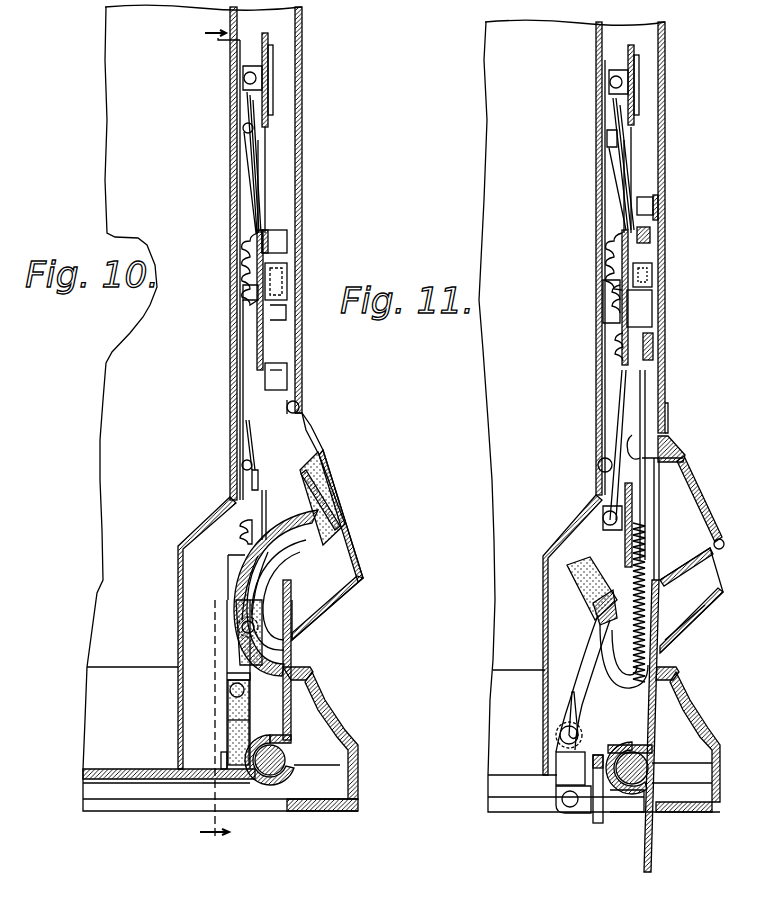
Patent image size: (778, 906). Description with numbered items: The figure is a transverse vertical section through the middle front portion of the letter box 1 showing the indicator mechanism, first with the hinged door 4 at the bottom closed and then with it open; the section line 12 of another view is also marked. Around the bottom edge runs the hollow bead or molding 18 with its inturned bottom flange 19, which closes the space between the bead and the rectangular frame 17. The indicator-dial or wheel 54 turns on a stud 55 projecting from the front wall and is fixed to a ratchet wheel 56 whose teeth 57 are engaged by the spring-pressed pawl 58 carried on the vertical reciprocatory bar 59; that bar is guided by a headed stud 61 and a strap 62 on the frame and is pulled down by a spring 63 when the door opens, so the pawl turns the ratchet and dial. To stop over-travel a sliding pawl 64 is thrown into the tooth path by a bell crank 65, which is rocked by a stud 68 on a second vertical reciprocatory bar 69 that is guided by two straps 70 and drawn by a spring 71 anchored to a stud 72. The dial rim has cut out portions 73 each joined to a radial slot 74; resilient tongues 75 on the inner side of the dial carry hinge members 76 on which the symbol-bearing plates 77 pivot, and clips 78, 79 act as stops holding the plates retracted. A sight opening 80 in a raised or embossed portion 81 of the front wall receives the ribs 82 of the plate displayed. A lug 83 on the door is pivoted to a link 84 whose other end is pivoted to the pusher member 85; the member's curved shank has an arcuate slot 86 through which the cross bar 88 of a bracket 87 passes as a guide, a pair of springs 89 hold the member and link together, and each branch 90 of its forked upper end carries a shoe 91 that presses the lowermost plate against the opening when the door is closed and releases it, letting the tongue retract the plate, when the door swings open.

In FIG. 10, the letter box 1 is at (300, 104).
In FIG. 11, the letter box 1 is at (663, 123).
In FIG. 10, the hinged door 4 is at (105, 773).
In FIG. 11, the hinged door 4 is at (653, 834).
In FIG. 10, the section line 12— 12 is at (219, 436).
In FIG. 10, the rectangular frame 17 is at (290, 713).
In FIG. 11, the rectangular frame 17 is at (658, 708).
In FIG. 10, the hollow bead or molding 18 is at (347, 741).
In FIG. 11, the hollow bead or molding 18 is at (704, 753).
In FIG. 10, the inturned bottom flange 19 is at (268, 810).
In FIG. 11, the inturned bottom flange 19 is at (705, 805).
In FIG. 10, the indicator-dial or wheel 54 is at (262, 323).
In FIG. 11, the indicator-dial or wheel 54 is at (627, 253).
In FIG. 10, the stud 55 is at (276, 313).
In FIG. 10, the ratchet wheel 56 is at (273, 281).
In FIG. 11, the ratchet wheel 56 is at (640, 323).
In FIG. 10, the teeth 57 is at (280, 254).
In FIG. 10, the spring-pressed pawl or hook 58 is at (280, 376).
In FIG. 10, the vertical reciprocatory bar 59 is at (286, 409).
In FIG. 10, the headed stud 61 is at (287, 580).
In FIG. 10, the strap 62 is at (222, 760).
In FIG. 10, the spring 63 is at (227, 728).
In FIG. 11, the sliding pawl 64 is at (648, 281).
In FIG. 11, the bell crank 65 is at (651, 205).
In FIG. 11, the stud 68 is at (644, 233).
In FIG. 11, the vertical reciprocatory bar 69 is at (652, 567).
In FIG. 11, the straps 70 is at (653, 344).
In FIG. 11, the spring 71 is at (660, 592).
In FIG. 11, the stud 72 is at (633, 693).
In FIG. 10, the cut out portions 73 is at (228, 500).
In FIG. 10, the radial slot 74 is at (265, 208).
In FIG. 11, the radial slot 74 is at (632, 185).
In FIG. 10, the resilient tongues 75 is at (248, 144).
In FIG. 11, the resilient tongues 75 is at (623, 450).
In FIG. 10, the hinge members 76 is at (313, 459).
In FIG. 11, the hinge members 76 is at (617, 97).
In FIG. 10, the plates 77 is at (266, 82).
In FIG. 11, the plates 77 is at (635, 80).
In FIG. 10, the clip 78 is at (252, 533).
In FIG. 11, the clip 78 is at (625, 57).
In FIG. 10, the clip 79 is at (255, 480).
In FIG. 11, the sight opening 80 is at (693, 505).
In FIG. 10, the raised or embossed portion 81 is at (364, 581).
In FIG. 11, the raised or embossed portion 81 is at (727, 582).
In FIG. 10, the ribs 82 is at (272, 52).
In FIG. 11, the ribs 82 is at (632, 489).
In FIG. 10, the lug 83 is at (233, 714).
In FIG. 11, the lug 83 is at (630, 800).
In FIG. 10, the link 84 is at (230, 675).
In FIG. 11, the link 84 is at (570, 770).
In FIG. 10, the pusher member 85 is at (250, 574).
In FIG. 11, the pusher member 85 is at (565, 703).
In FIG. 10, the arcuate slot 86 is at (241, 594).
In FIG. 11, the arcuate slot 86 is at (570, 694).
In FIG. 10, the bracket 87 is at (268, 653).
In FIG. 11, the bracket 87 is at (657, 661).
In FIG. 10, the cross bar 88 is at (234, 630).
In FIG. 11, the cross bar 88 is at (590, 622).
In FIG. 10, the springs 89 is at (228, 557).
In FIG. 11, the springs 89 is at (590, 714).
In FIG. 10, the branch 90 is at (313, 587).
In FIG. 10, the shoe 91 is at (330, 493).
In FIG. 11, the shoe 91 is at (593, 573).